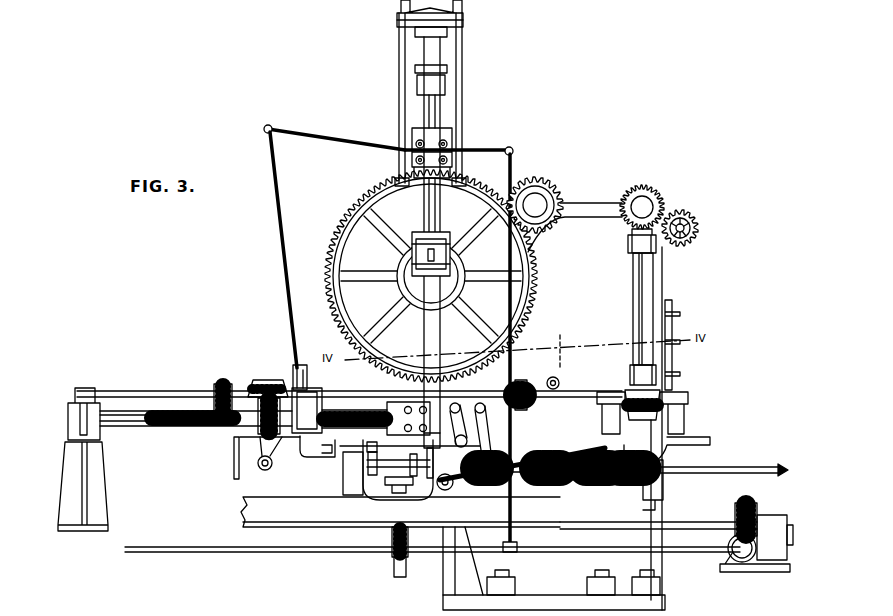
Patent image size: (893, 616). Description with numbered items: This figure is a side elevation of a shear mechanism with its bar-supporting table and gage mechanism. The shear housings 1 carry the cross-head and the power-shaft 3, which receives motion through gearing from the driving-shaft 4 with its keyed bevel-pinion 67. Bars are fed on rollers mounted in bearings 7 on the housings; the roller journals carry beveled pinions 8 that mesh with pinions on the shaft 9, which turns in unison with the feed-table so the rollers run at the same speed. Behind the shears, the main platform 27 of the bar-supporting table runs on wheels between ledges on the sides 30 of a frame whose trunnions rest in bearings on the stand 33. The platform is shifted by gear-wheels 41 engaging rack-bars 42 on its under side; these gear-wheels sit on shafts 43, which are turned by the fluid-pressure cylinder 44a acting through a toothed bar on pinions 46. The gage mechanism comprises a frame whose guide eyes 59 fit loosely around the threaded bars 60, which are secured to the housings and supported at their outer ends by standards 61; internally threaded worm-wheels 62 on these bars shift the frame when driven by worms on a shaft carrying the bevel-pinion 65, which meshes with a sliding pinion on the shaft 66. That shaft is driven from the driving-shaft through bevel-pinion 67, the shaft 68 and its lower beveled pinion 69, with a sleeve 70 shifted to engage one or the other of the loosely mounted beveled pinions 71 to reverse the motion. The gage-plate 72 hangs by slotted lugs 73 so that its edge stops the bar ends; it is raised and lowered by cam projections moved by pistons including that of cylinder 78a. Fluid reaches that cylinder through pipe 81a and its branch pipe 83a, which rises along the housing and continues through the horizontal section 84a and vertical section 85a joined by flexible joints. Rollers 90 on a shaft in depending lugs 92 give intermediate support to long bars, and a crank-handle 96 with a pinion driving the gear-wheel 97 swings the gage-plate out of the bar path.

The housings 1 is at (604, 406).
The power-shaft 3 is at (453, 276).
The driving-shaft 4 is at (652, 209).
The bearings 7 is at (562, 480).
The beveled pinions 8 is at (574, 486).
The shaft 9 is at (724, 468).
The main platform 27 is at (375, 465).
The sides of frame 30 is at (368, 446).
The stand 33 is at (400, 512).
The gear-wheels 41 is at (400, 566).
The rack-bars 42 is at (385, 488).
The shafts 43 is at (688, 521).
The fluid-pressure cylinder 44a is at (735, 558).
The pinions 46 is at (748, 507).
The guide eyes or loops 59 is at (236, 427).
The threaded bars 60 is at (168, 430).
The standards 61 is at (73, 463).
The worm-wheels 62 is at (262, 438).
The bevel-pinion 65 is at (264, 413).
The shaft 66 is at (153, 395).
The bevel-pinion 67 is at (640, 189).
The shaft 68 is at (637, 307).
The beveled pinion 69 is at (631, 372).
The sleeve 70 is at (632, 386).
The beveled pinions 71 is at (624, 392).
The gage-plate 72 is at (340, 458).
The lugs or ears 73 is at (294, 369).
The fluid-pressure cylinder 78a is at (325, 378).
The pipe 81a is at (320, 554).
The branch pipe 83a is at (516, 501).
The horizontal section 84a is at (357, 143).
The vertical section 85a is at (285, 211).
The rollers 90 is at (270, 466).
The lugs 92 is at (280, 448).
The crank-handle 96 is at (237, 460).
The gear-wheel 97 is at (226, 386).